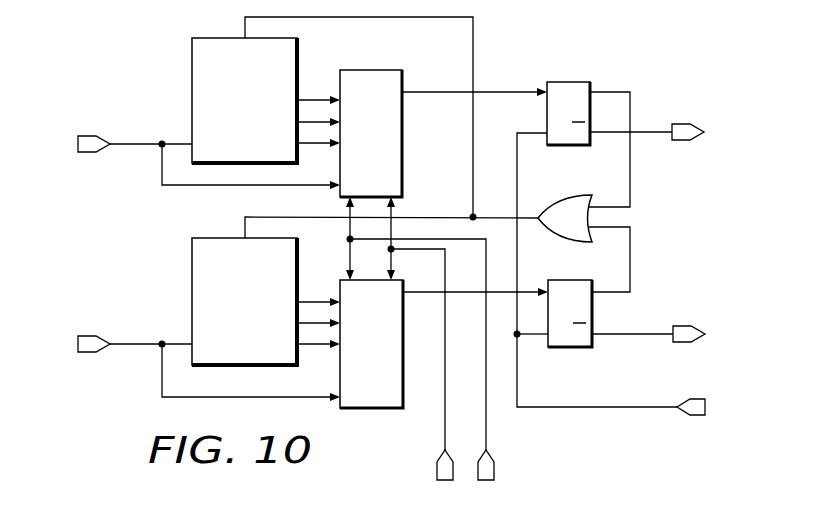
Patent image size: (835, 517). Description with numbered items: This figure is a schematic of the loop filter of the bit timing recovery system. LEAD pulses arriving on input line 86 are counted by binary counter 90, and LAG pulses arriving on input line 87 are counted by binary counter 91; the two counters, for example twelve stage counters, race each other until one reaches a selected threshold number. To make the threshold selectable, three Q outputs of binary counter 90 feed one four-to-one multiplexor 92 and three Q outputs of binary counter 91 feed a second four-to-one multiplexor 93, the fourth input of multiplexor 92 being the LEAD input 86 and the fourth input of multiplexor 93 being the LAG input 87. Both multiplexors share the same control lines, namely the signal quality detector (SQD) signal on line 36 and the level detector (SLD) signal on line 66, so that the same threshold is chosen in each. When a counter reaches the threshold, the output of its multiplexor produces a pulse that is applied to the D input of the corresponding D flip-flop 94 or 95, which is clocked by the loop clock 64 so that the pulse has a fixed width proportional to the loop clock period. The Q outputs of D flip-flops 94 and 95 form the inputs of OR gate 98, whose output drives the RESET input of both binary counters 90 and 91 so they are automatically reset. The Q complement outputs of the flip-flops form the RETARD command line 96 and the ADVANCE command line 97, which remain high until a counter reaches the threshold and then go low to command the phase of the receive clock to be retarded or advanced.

The SQD signal line 36 is at (437, 469).
The loop clock signal 64 is at (697, 415).
The SLD signal line 66 is at (494, 469).
The LEAD input line 86 is at (90, 136).
The LAG input line 87 is at (90, 336).
The binary counter 90 is at (192, 104).
The binary counter 91 is at (192, 300).
The 4:1 multiplexor 92 is at (358, 177).
The 4:1 multiplexor 93 is at (358, 392).
The D flip-flop 94 is at (567, 82).
The D flip-flop 95 is at (570, 348).
The RETARD command line 96 is at (680, 124).
The ADVANCE command line 97 is at (682, 326).
The OR gate 98 is at (592, 195).